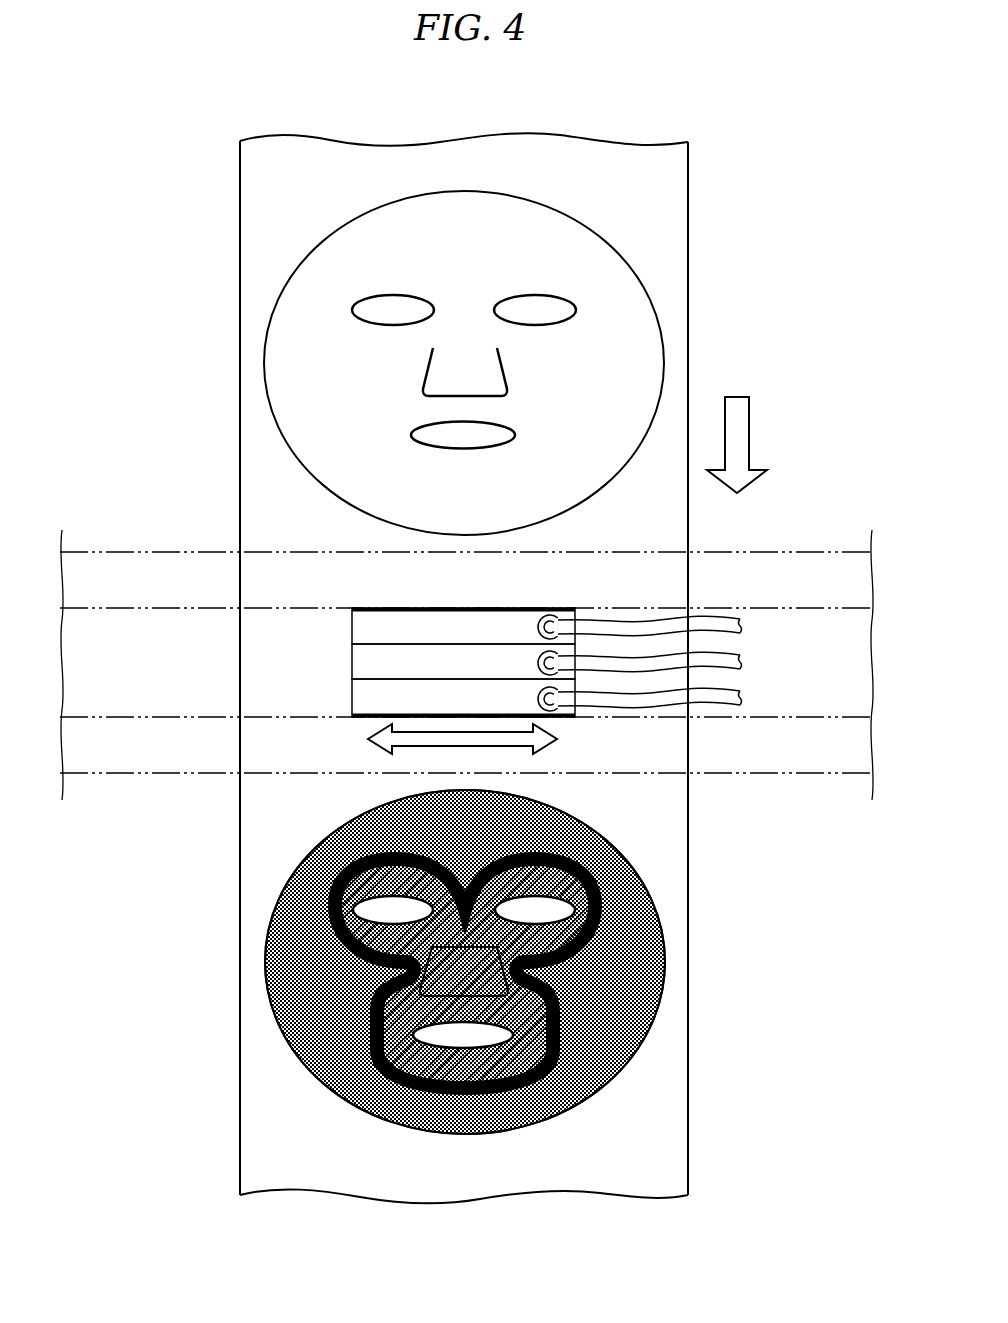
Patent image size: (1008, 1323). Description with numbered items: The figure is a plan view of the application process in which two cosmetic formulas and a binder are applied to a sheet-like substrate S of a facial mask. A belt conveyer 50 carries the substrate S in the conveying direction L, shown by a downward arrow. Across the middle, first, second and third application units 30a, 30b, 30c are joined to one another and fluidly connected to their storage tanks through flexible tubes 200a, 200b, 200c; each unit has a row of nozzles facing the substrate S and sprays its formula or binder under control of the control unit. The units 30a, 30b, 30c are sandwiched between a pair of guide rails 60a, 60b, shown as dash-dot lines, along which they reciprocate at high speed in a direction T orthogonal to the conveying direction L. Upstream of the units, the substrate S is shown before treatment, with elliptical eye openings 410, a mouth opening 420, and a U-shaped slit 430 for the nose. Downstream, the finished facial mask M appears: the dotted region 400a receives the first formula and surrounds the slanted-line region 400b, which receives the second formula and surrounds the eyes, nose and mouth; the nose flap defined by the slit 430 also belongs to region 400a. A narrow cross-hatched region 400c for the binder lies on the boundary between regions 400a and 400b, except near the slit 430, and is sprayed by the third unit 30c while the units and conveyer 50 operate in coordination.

The conveyer 50 is at (680, 213).
The substrate S is at (340, 213).
The conveying direction L is at (742, 433).
The reciprocal movement direction T is at (415, 740).
The facial mask M is at (303, 840).
The guide rail 60a is at (268, 553).
The guide rail 60b is at (147, 773).
The first application unit 30a is at (362, 695).
The second application unit 30b is at (362, 660).
The third application unit 30c is at (362, 626).
The flexible tube 200a is at (700, 693).
The flexible tube 200b is at (698, 658).
The flexible tube 200c is at (647, 625).
The eye openings 410 is at (378, 312).
The mouth opening 420 is at (430, 432).
The U-shaped slit 430 is at (418, 382).
The region for the first formula 400a is at (490, 988).
The region for the second formula 400b is at (528, 997).
The region for the binder 400c is at (568, 866).